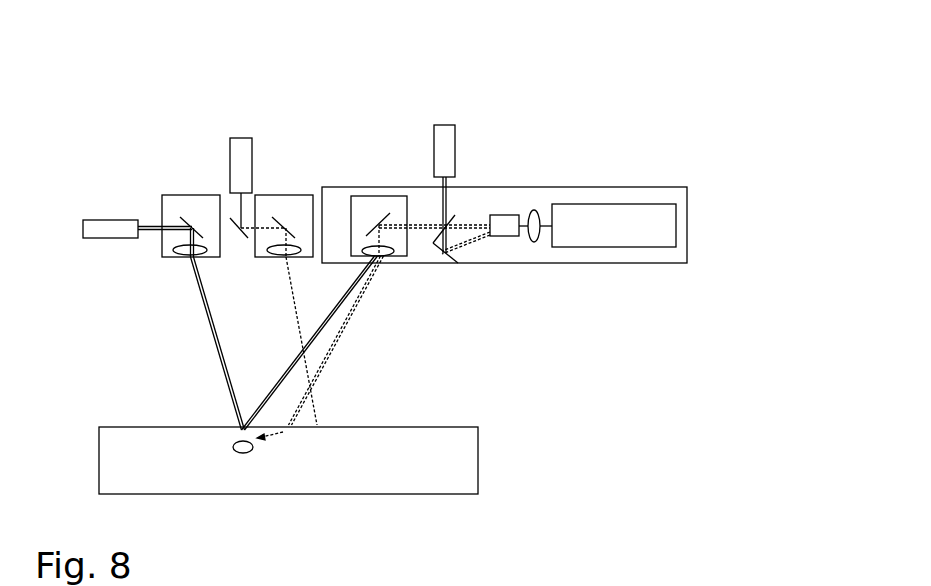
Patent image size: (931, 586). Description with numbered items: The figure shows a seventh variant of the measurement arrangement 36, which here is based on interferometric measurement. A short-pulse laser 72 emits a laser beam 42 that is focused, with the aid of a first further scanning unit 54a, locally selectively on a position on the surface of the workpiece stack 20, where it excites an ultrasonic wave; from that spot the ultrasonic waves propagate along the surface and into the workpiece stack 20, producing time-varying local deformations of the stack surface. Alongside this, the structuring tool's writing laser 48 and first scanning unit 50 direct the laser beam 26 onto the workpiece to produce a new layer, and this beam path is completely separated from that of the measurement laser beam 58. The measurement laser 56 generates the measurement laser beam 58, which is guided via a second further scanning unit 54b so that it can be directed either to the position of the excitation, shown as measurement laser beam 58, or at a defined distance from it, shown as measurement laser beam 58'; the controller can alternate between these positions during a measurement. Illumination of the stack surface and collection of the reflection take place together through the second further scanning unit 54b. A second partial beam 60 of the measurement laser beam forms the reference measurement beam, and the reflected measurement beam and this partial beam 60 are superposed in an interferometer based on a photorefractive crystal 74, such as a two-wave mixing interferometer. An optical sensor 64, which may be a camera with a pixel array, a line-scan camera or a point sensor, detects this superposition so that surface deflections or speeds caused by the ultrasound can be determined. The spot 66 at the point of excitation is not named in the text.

The measurement arrangement 36 is at (699, 49).
The short-pulse laser 72 is at (103, 218).
The first further scanning unit 54a is at (174, 189).
The laser 48 is at (242, 137).
The first scanning unit 50 is at (282, 193).
The laser beam 26 is at (292, 293).
The laser beam 42 is at (213, 342).
The optical sensor 64 is at (687, 218).
The second further scanning unit 54b is at (368, 195).
The measurement laser 56 is at (445, 124).
The partial beam 60 is at (473, 247).
The photorefractive crystal 74 is at (498, 215).
The measurement laser beam 58 is at (307, 343).
The measurement laser beam 58' is at (353, 340).
The workpiece stack 20 is at (478, 455).
The measurement spot 66 is at (250, 455).